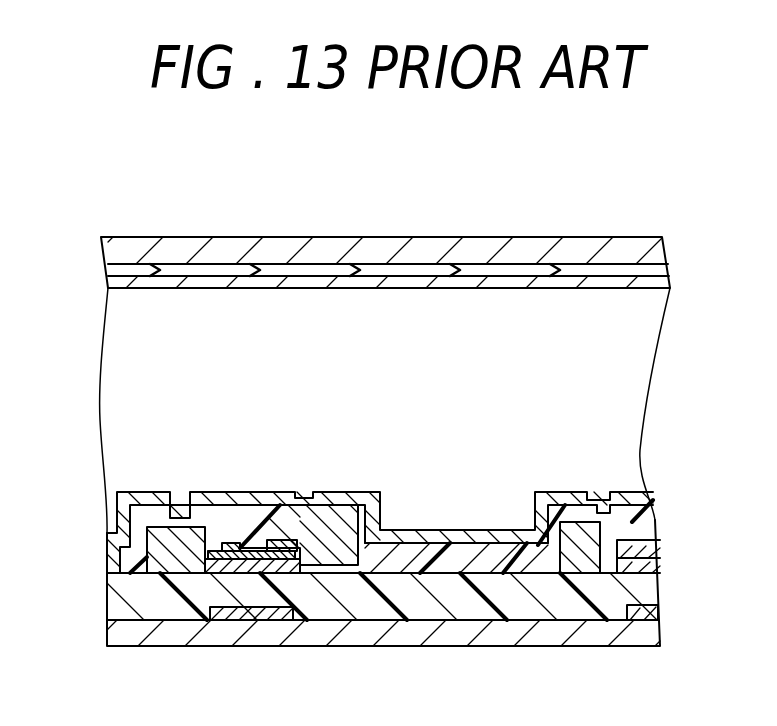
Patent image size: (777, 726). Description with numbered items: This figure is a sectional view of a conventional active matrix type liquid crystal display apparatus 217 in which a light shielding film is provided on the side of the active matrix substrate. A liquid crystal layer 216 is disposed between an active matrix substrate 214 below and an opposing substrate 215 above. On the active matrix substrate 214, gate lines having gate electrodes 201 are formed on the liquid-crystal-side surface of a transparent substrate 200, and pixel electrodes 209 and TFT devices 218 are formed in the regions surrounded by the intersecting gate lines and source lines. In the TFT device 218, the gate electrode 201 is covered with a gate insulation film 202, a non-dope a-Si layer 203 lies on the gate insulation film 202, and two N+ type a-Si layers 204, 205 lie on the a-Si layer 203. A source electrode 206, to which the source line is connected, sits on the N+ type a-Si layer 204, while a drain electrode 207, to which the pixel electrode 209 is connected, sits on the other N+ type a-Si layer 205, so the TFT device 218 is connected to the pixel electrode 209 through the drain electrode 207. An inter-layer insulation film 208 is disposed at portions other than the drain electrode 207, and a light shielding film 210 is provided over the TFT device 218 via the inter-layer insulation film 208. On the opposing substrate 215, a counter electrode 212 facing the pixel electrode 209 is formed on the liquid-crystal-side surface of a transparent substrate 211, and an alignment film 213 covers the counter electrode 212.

The transparent substrate 200 is at (613, 632).
The gate electrode 201 is at (218, 620).
The gate insulation film 202 is at (167, 602).
The non-dope a-Si layer 203 is at (278, 562).
The N+ type a-Si layer 204 is at (218, 543).
The N+ type a-Si layer 205 is at (322, 505).
The source electrode 206 is at (150, 548).
The drain electrode 207 is at (362, 573).
The inter-layer insulation film 208 is at (488, 558).
The pixel electrode 209 is at (440, 555).
The light shielding film 210 is at (283, 497).
The transparent substrate 211 is at (405, 256).
The counter electrode 212 is at (298, 272).
The alignment film 213 is at (200, 281).
The active matrix substrate 214 is at (668, 492).
The opposing substrate 215 is at (672, 237).
The liquid crystal layer 216 is at (642, 376).
The liquid crystal display apparatus 217 is at (534, 182).
The TFT device 218 is at (330, 437).